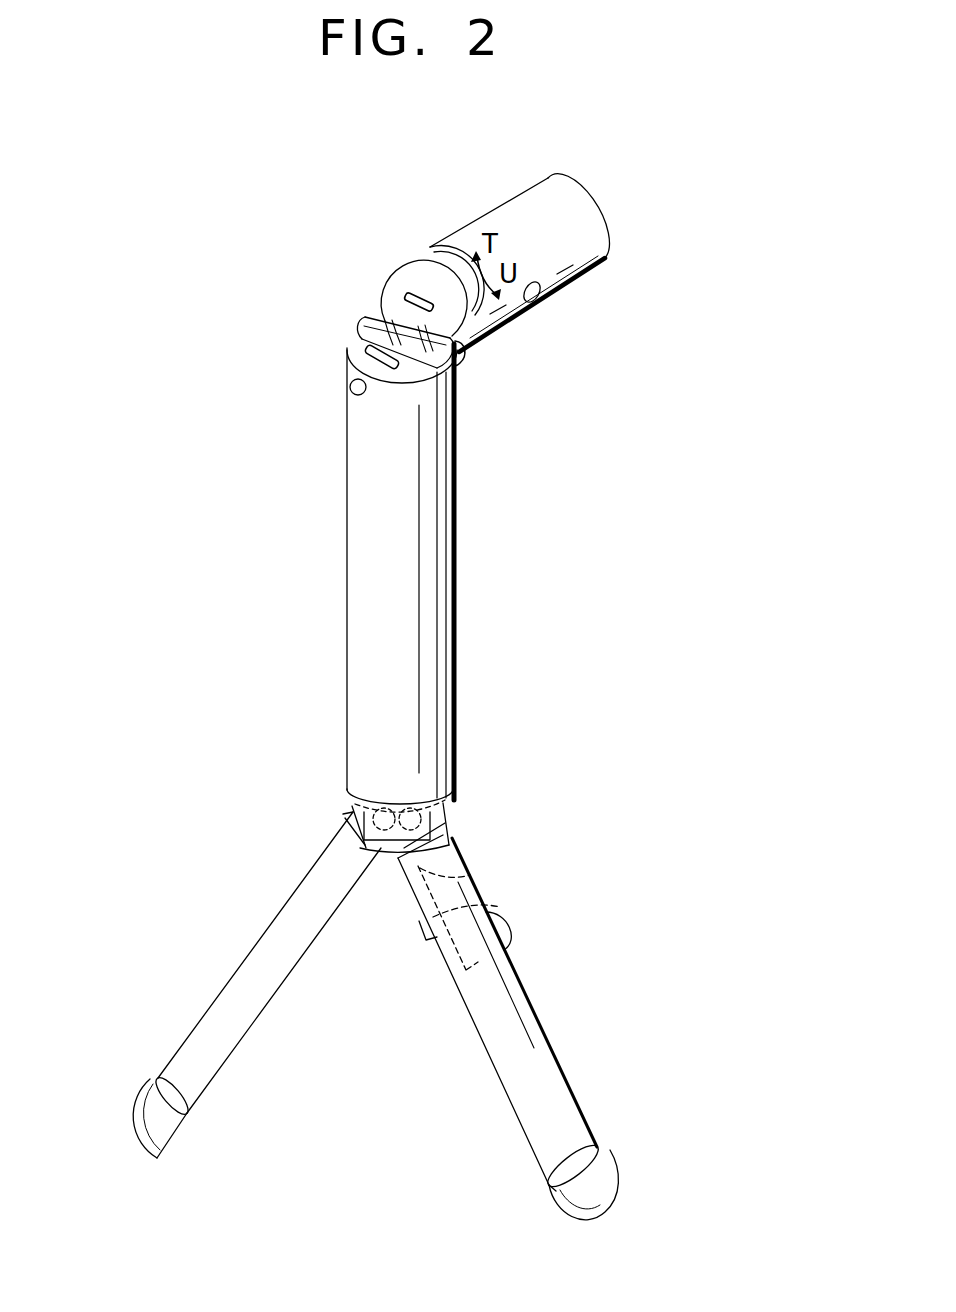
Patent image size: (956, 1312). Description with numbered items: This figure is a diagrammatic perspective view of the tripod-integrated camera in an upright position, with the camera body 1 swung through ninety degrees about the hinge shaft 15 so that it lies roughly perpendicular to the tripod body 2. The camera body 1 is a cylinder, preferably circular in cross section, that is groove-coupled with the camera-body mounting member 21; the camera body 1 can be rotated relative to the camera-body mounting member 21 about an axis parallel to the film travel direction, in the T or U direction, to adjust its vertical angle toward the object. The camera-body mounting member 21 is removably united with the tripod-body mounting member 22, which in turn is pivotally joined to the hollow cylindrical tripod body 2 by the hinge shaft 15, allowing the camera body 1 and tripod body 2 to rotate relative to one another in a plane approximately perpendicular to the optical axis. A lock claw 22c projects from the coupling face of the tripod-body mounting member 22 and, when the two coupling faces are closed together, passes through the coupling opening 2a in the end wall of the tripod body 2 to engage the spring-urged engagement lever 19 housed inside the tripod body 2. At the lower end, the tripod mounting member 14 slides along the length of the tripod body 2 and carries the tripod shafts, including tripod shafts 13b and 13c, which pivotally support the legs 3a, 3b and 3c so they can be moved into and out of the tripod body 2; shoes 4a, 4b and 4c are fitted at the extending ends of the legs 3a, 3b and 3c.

The camera body 1 is at (585, 255).
The tripod body 2 is at (441, 597).
The coupling opening 2a is at (367, 357).
The leg 3a is at (455, 877).
The leg 3b is at (490, 1018).
The leg 3c is at (243, 1020).
The shoe 4a is at (510, 931).
The shoe 4b is at (603, 1182).
The shoe 4c is at (148, 1132).
The tripod shaft 13b is at (395, 862).
The tripod shaft 13c is at (360, 802).
The tripod mounting member 14 is at (455, 803).
The hinge shaft 15 is at (459, 357).
The engagement lever 19 is at (350, 394).
The camera-body mounting member 21 is at (447, 254).
The tripod-body mounting member 22 is at (427, 268).
The lock claw 22c is at (408, 296).